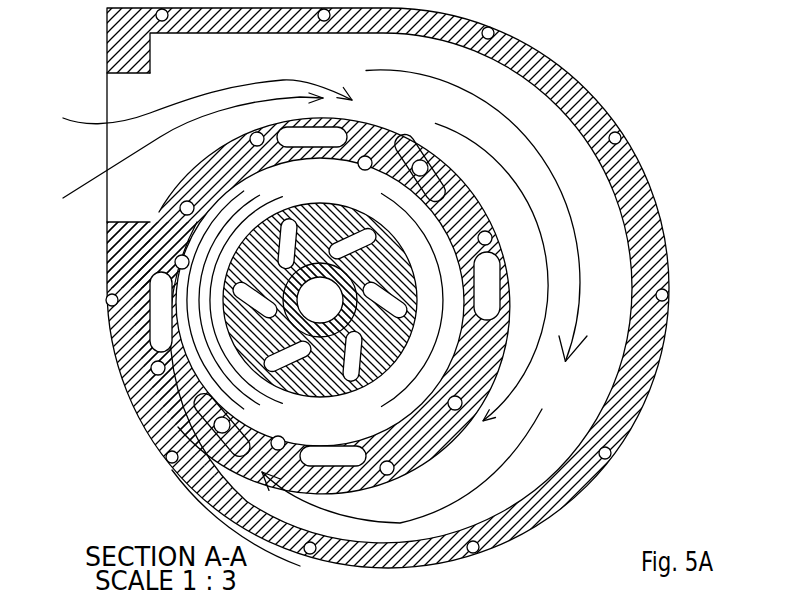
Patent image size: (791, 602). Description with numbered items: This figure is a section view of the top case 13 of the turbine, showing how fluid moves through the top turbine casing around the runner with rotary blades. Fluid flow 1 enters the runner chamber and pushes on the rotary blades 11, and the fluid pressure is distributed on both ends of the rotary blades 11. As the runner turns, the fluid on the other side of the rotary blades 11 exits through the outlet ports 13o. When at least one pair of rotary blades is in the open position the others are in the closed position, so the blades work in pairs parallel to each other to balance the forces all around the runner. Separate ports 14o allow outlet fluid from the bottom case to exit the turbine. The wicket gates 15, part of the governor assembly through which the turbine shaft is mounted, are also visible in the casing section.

The fluid flow 1 is at (65, 117).
The rotary blades 11 is at (258, 208).
The top case 13 is at (640, 162).
The outlet ports 13o is at (357, 482).
The ports 14o is at (117, 362).
The wicket gates 15 is at (234, 515).